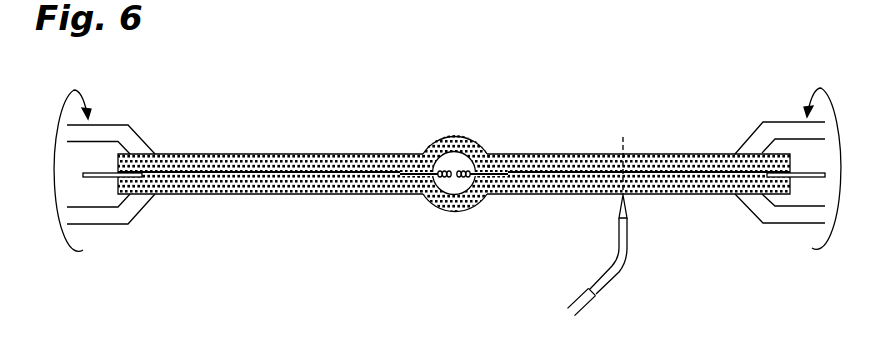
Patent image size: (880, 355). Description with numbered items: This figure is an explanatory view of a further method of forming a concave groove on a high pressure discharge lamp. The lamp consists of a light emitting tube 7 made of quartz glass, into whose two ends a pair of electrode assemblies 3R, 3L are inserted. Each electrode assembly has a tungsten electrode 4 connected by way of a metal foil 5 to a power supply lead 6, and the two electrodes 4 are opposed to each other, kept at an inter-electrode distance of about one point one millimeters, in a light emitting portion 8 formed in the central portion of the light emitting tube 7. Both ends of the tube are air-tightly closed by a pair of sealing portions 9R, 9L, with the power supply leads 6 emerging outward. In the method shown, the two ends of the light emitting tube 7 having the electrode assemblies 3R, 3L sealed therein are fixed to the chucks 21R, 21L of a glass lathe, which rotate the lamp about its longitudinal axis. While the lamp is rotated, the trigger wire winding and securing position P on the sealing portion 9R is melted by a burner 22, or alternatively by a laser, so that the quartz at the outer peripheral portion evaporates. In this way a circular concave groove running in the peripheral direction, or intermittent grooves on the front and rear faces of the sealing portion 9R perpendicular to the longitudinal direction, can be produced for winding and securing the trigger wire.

The electrode assembly 3L is at (168, 68).
The electrode assembly 3R is at (485, 68).
The tungsten electrode 4 is at (441, 165).
The metal foil 5 is at (248, 168).
The power supply lead 6 is at (108, 174).
The light emitting tube 7 is at (513, 266).
The light emitting portion 8 is at (433, 198).
The sealing portion 9L is at (305, 185).
The sealing portion 9R is at (538, 184).
The chuck 21L is at (127, 215).
The chuck 21R is at (780, 215).
The burner 22 is at (608, 282).
The trigger wire winding and securing position P is at (621, 152).